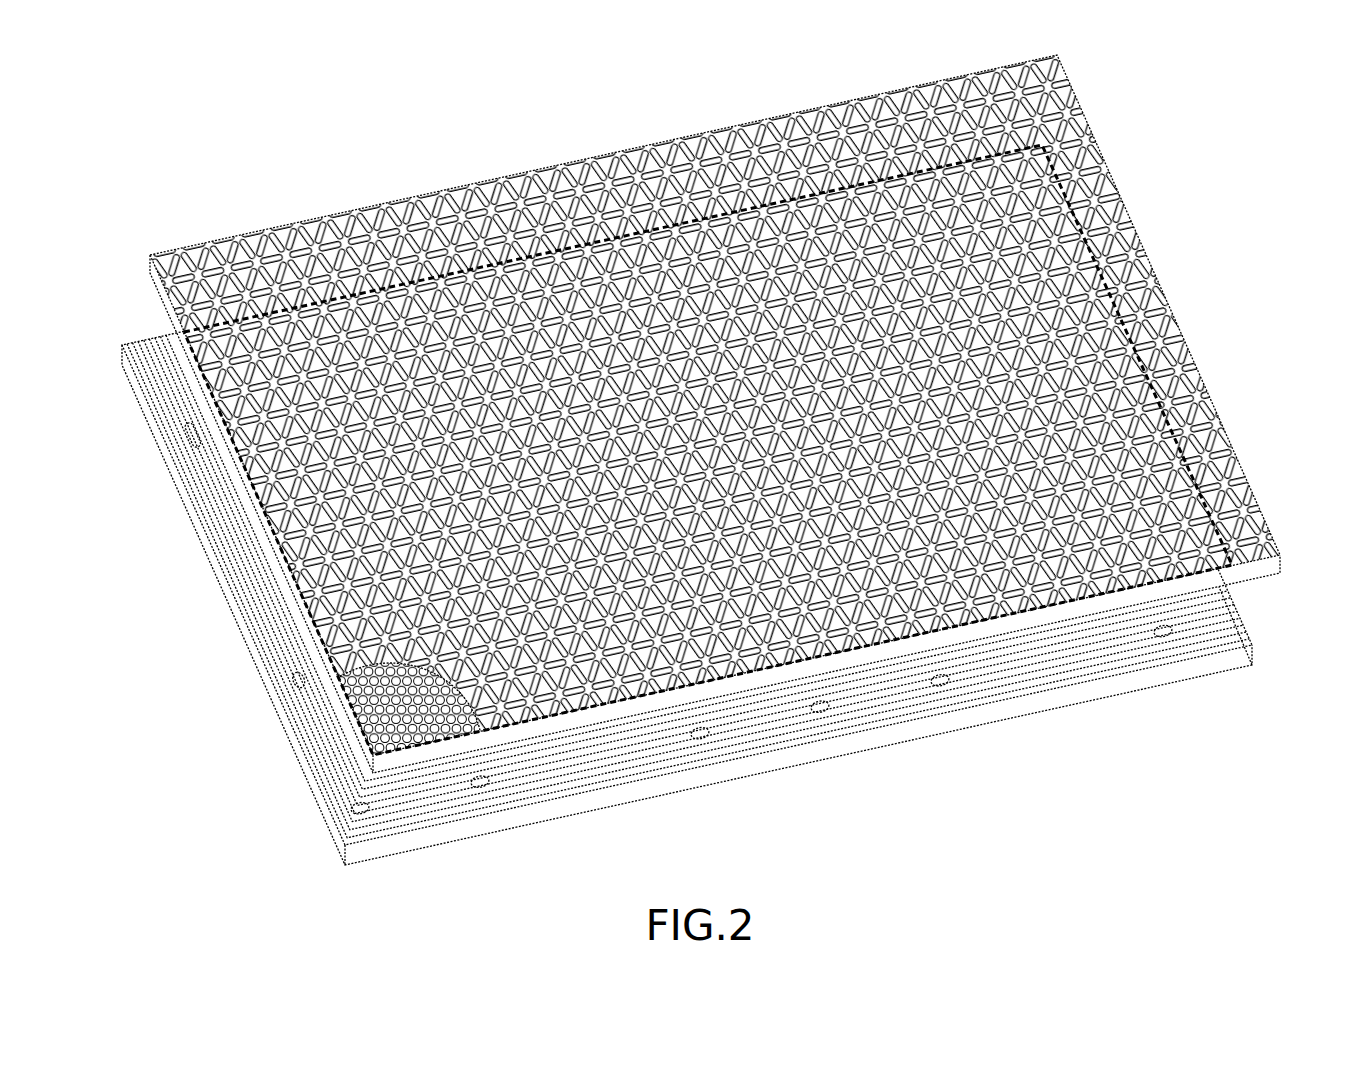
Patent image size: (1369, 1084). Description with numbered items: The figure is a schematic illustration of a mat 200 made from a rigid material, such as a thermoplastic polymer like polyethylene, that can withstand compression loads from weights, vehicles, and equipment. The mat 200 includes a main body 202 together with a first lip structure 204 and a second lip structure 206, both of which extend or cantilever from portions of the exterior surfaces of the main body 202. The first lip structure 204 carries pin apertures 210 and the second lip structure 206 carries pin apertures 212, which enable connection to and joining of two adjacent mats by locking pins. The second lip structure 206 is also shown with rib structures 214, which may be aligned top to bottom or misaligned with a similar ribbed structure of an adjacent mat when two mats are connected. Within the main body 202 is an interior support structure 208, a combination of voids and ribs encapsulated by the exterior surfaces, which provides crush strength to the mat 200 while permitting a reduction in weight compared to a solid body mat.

The mat 200 is at (701, 467).
The main body 202 is at (310, 630).
The first lip structure 204 is at (715, 444).
The second lip structure 206 is at (690, 603).
The interior support structure 208 is at (367, 747).
The pin apertures 210 is at (592, 205).
The pin apertures 212 is at (290, 682).
The rib structures 214 is at (178, 408).